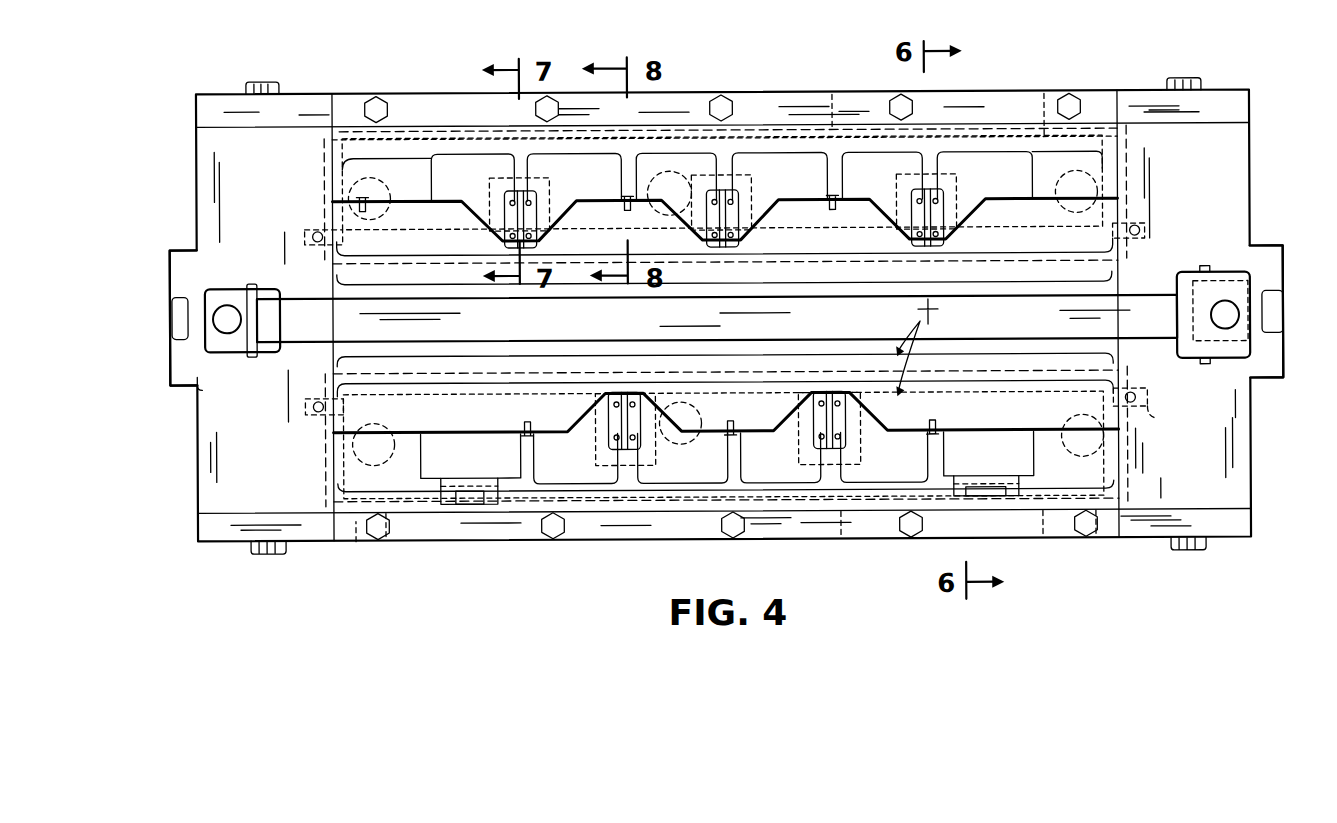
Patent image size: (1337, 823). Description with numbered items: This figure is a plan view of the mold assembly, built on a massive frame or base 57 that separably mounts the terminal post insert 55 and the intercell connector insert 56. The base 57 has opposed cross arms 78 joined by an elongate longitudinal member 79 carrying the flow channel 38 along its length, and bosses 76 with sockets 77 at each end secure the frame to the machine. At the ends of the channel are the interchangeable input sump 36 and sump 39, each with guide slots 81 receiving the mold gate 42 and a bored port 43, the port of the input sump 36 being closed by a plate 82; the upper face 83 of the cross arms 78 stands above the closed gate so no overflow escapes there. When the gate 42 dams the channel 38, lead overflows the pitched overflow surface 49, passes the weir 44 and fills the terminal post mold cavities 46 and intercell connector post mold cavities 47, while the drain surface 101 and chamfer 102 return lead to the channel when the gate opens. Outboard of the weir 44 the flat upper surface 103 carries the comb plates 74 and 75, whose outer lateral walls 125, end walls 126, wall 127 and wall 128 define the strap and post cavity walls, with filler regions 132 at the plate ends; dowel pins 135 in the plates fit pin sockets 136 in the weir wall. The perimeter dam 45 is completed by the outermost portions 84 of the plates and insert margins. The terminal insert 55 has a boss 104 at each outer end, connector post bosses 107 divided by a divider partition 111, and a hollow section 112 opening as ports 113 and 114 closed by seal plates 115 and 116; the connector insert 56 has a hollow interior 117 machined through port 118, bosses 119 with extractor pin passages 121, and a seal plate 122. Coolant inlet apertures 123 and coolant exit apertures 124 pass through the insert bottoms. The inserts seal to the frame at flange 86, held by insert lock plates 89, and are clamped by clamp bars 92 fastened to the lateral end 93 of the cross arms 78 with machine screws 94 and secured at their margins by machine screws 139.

The input sump 36 is at (1250, 385).
The flow channel 38 is at (842, 331).
The sump 39 is at (197, 380).
The mold gate 42 is at (248, 288).
The port 43 is at (225, 320).
The weir 44 is at (385, 430).
The lead containing dam 45 is at (789, 86).
The terminal post mold cavities 46 is at (465, 505).
The intercell connector post mold cavities 47 is at (510, 228).
The overflow surface 49 is at (916, 347).
The terminal post insert 55 is at (580, 472).
The intercell connector insert 56 is at (473, 150).
The frame or base 57 is at (1256, 153).
The comb plate 74 is at (1045, 140).
The comb plate 75 is at (1052, 480).
The bosses 76 is at (170, 262).
The sockets 77 is at (178, 312).
The cross arms 78 is at (205, 160).
The elongate longitudinal member 79 is at (855, 268).
The guide slots 81 is at (250, 288).
The plate 82 is at (1248, 342).
The upper face 83 is at (1172, 206).
The outermost portions 84 is at (985, 100).
The flange 86 is at (325, 203).
The insert lock plates 89 is at (1152, 416).
The clamp bars 92 is at (233, 95).
The lateral end 93 is at (205, 520).
The machine screws 94 is at (1180, 548).
The drain surface 101 is at (450, 419).
The chamfer 102 is at (505, 383).
The upper surface 103 is at (665, 476).
The boss 104 is at (432, 540).
The connector post bosses 107 is at (630, 455).
The divider partition 111 is at (530, 195).
The hollow section 112 is at (385, 540).
The ports 113 is at (1073, 385).
The ports 114 is at (1095, 512).
The seal plates 115 is at (483, 385).
The seal plates 116 is at (355, 540).
The hollow interior 117 is at (410, 140).
The port 118 is at (357, 95).
The bosses 119 is at (490, 195).
The extractor pin passages 121 is at (540, 232).
The seal plate 122 is at (833, 110).
The coolant inlet apertures 123 is at (380, 217).
The coolant exit apertures 124 is at (690, 185).
The outer lateral walls 125 is at (975, 163).
The end walls 126 is at (920, 200).
The wall 127 is at (485, 505).
The wall 128 is at (740, 200).
The filler regions 132 is at (352, 160).
The dowel pins 135 is at (630, 212).
The pin sockets 136 is at (616, 208).
The machine screws 139 is at (722, 100).